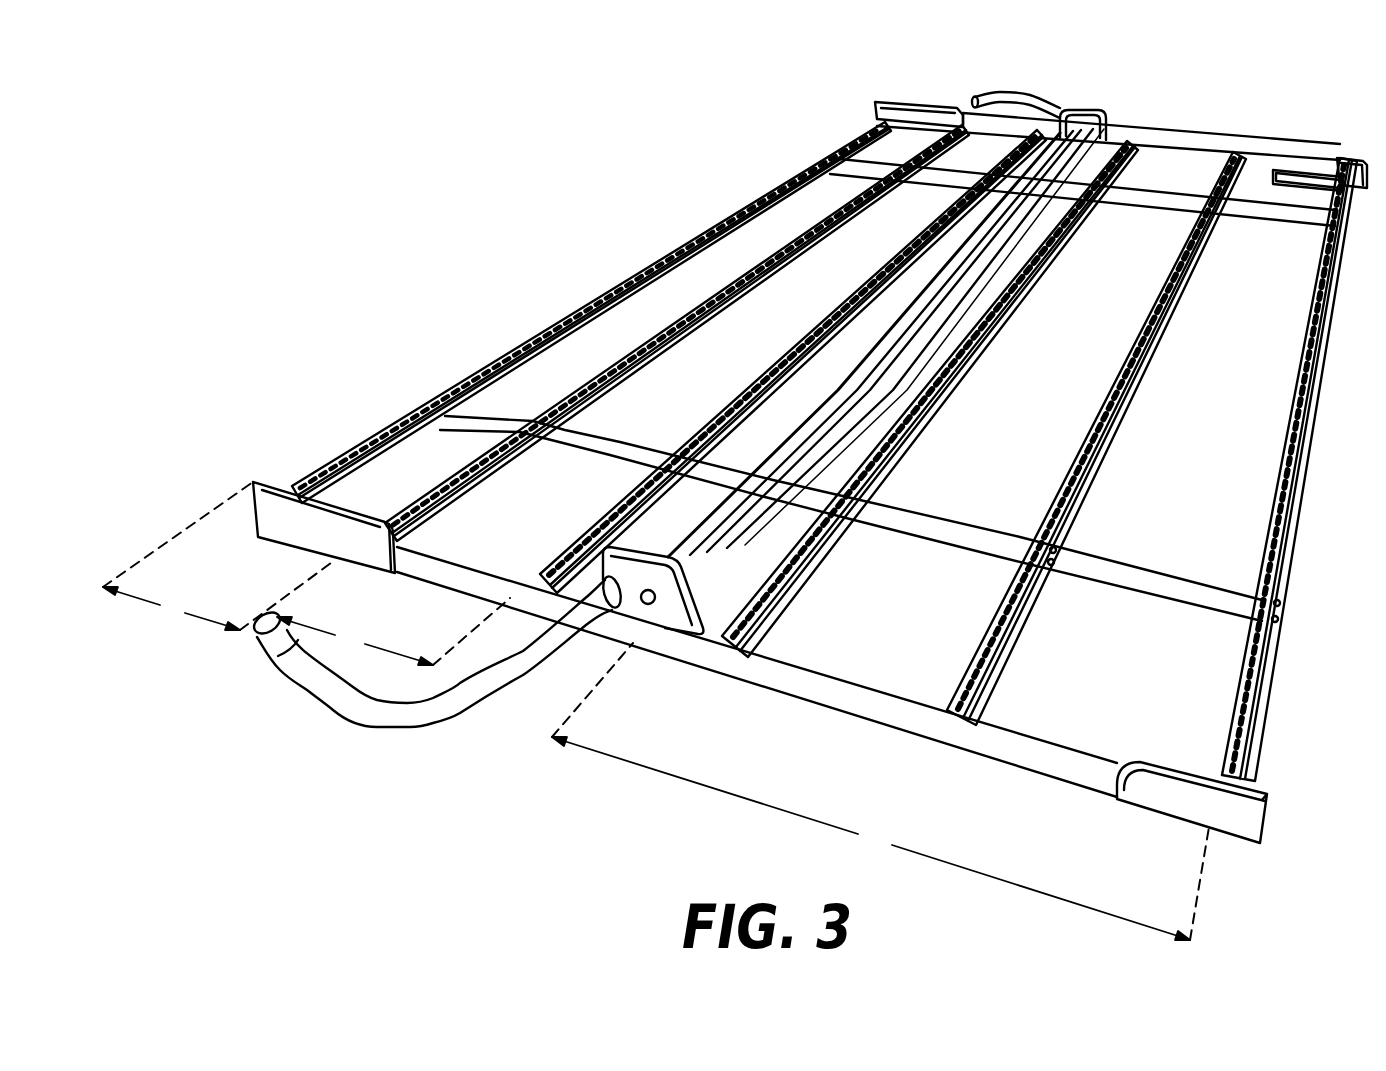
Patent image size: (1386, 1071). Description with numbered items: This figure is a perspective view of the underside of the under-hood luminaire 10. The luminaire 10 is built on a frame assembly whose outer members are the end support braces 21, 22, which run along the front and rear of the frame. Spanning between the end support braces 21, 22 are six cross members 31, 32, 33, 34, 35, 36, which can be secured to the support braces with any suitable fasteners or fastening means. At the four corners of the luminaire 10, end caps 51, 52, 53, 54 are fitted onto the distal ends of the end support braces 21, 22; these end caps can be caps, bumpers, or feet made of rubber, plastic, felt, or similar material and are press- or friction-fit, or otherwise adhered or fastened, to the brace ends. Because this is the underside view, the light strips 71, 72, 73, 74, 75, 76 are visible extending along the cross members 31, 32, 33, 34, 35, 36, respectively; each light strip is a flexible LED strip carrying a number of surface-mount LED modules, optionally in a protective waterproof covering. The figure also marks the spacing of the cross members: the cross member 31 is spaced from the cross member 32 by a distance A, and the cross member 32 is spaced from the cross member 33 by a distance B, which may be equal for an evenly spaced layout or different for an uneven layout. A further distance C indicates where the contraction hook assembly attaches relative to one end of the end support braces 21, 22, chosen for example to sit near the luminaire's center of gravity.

The luminaire 10 is at (1283, 65).
The end support brace 21 is at (843, 706).
The end support brace 22 is at (1190, 136).
The cross member 31 is at (591, 312).
The cross member 32 is at (677, 333).
The cross member 33 is at (793, 361).
The cross member 34 is at (930, 399).
The cross member 35 is at (1096, 438).
The cross member 36 is at (1289, 469).
The end cap 51 is at (910, 100).
The end cap 52 is at (263, 540).
The end cap 53 is at (1356, 193).
The end cap 54 is at (1228, 848).
The light strip 71 is at (763, 203).
The light strip 72 is at (768, 278).
The light strip 73 is at (922, 233).
The light strip 74 is at (1083, 228).
The light strip 75 is at (1194, 228).
The light strip 76 is at (1324, 230).